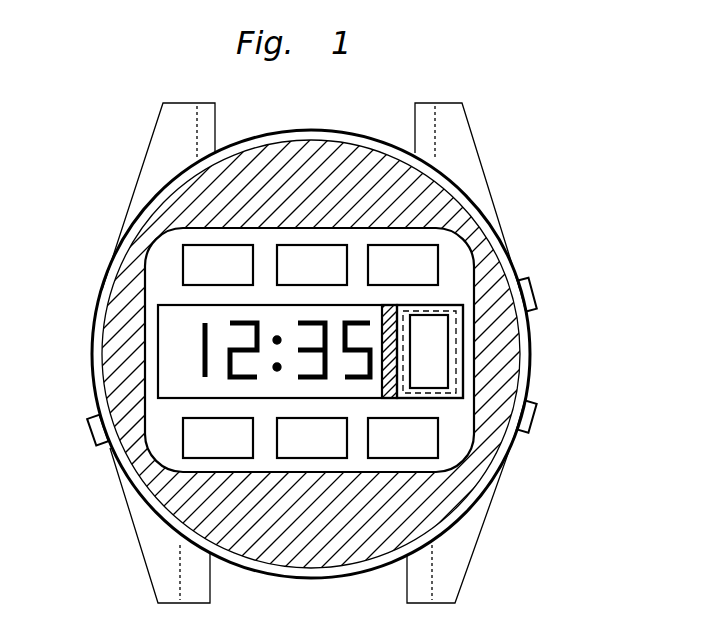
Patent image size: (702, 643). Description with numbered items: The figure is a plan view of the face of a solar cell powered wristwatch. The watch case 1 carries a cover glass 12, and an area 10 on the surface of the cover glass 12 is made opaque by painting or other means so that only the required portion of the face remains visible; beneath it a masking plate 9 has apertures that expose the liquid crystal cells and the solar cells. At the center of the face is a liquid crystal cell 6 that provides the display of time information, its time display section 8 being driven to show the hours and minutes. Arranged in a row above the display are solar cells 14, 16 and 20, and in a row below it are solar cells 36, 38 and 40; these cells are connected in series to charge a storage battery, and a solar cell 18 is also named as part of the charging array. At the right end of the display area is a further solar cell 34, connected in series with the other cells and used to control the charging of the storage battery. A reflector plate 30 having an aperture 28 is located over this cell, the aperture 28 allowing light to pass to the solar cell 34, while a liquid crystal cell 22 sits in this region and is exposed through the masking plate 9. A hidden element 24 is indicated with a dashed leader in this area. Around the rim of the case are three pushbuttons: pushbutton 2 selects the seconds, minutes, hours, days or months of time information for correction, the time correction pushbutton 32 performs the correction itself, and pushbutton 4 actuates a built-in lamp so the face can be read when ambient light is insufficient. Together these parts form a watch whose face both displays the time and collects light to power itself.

The watch case 1 is at (94, 309).
The pushbutton 2 is at (533, 289).
The pushbutton 4 is at (90, 427).
The liquid crystal cell 6 is at (259, 400).
The time display section 8 is at (178, 383).
The masking plate 9 is at (493, 480).
The opaque area 10 is at (130, 288).
The cover glass 12 is at (157, 262).
The solar cell 14 is at (218, 262).
The solar cell 16 is at (316, 262).
The solar cell 18 is at (392, 312).
The solar cell 20 is at (428, 260).
The liquid crystal cell 22 is at (443, 303).
The photosensor (hidden) 24 is at (494, 340).
The aperture 28 is at (496, 396).
The reflector plate 30 is at (457, 385).
The time correction pushbutton 32 is at (536, 412).
The solar cell 34 is at (433, 378).
The solar cell 36 is at (240, 448).
The solar cell 38 is at (313, 445).
The solar cell 40 is at (392, 440).